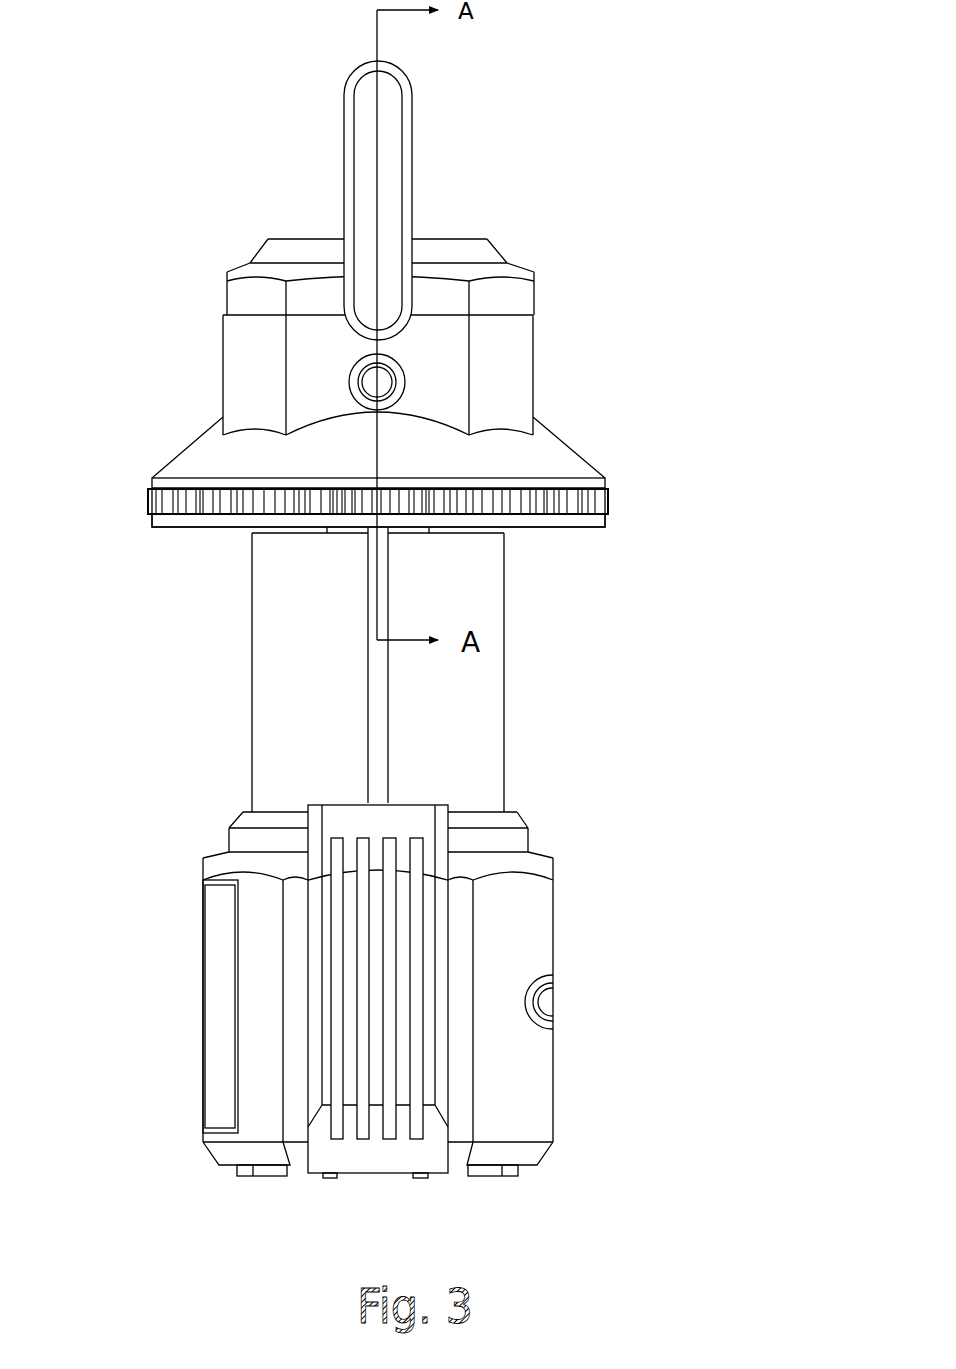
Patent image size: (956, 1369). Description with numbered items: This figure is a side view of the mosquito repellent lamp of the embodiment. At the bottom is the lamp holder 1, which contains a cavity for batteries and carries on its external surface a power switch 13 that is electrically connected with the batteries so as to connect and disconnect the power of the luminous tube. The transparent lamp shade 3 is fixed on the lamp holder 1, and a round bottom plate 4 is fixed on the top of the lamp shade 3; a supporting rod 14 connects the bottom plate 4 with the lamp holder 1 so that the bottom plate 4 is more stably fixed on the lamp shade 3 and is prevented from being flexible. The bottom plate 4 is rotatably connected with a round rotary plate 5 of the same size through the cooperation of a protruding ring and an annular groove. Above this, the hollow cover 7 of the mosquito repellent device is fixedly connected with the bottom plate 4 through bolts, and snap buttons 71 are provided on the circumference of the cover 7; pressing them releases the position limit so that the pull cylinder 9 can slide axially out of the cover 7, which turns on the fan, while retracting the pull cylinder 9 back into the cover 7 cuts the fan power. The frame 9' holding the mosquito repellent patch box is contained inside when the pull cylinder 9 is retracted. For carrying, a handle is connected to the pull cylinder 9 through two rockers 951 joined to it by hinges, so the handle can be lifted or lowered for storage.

The lamp holder 1 is at (530, 1105).
The lamp shade 3 is at (292, 647).
The bottom plate 4 is at (177, 522).
The rotary plate 5 is at (577, 500).
The cover 7 is at (547, 450).
The pull cylinder 9 is at (450, 341).
The frame 9' is at (394, 194).
The rockers 951 is at (372, 220).
The snap buttons 71 is at (382, 382).
The power switch 13 is at (545, 1002).
The supporting rod 14 is at (382, 744).